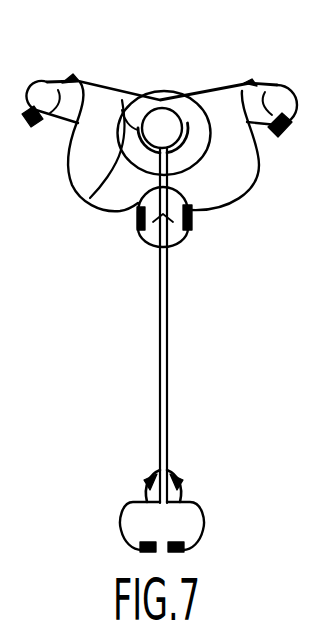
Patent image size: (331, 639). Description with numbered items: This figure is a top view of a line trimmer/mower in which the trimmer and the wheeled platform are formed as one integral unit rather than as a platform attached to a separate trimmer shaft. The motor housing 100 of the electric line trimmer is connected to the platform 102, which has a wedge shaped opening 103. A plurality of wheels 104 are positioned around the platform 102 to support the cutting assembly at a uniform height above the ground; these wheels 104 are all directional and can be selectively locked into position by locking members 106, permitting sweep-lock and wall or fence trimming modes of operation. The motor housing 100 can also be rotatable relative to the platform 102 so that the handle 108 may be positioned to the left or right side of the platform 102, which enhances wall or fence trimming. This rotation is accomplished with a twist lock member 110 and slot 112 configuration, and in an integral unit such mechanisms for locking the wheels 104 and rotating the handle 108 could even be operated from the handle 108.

The motor housing 100 is at (90, 198).
The platform 102 is at (247, 185).
The wedge shaped opening 103 is at (215, 84).
The wheels 104 is at (136, 217).
The locking members 106 is at (183, 237).
The handle 108 is at (169, 341).
The twist lock member 110 is at (78, 81).
The slot 112 is at (122, 100).